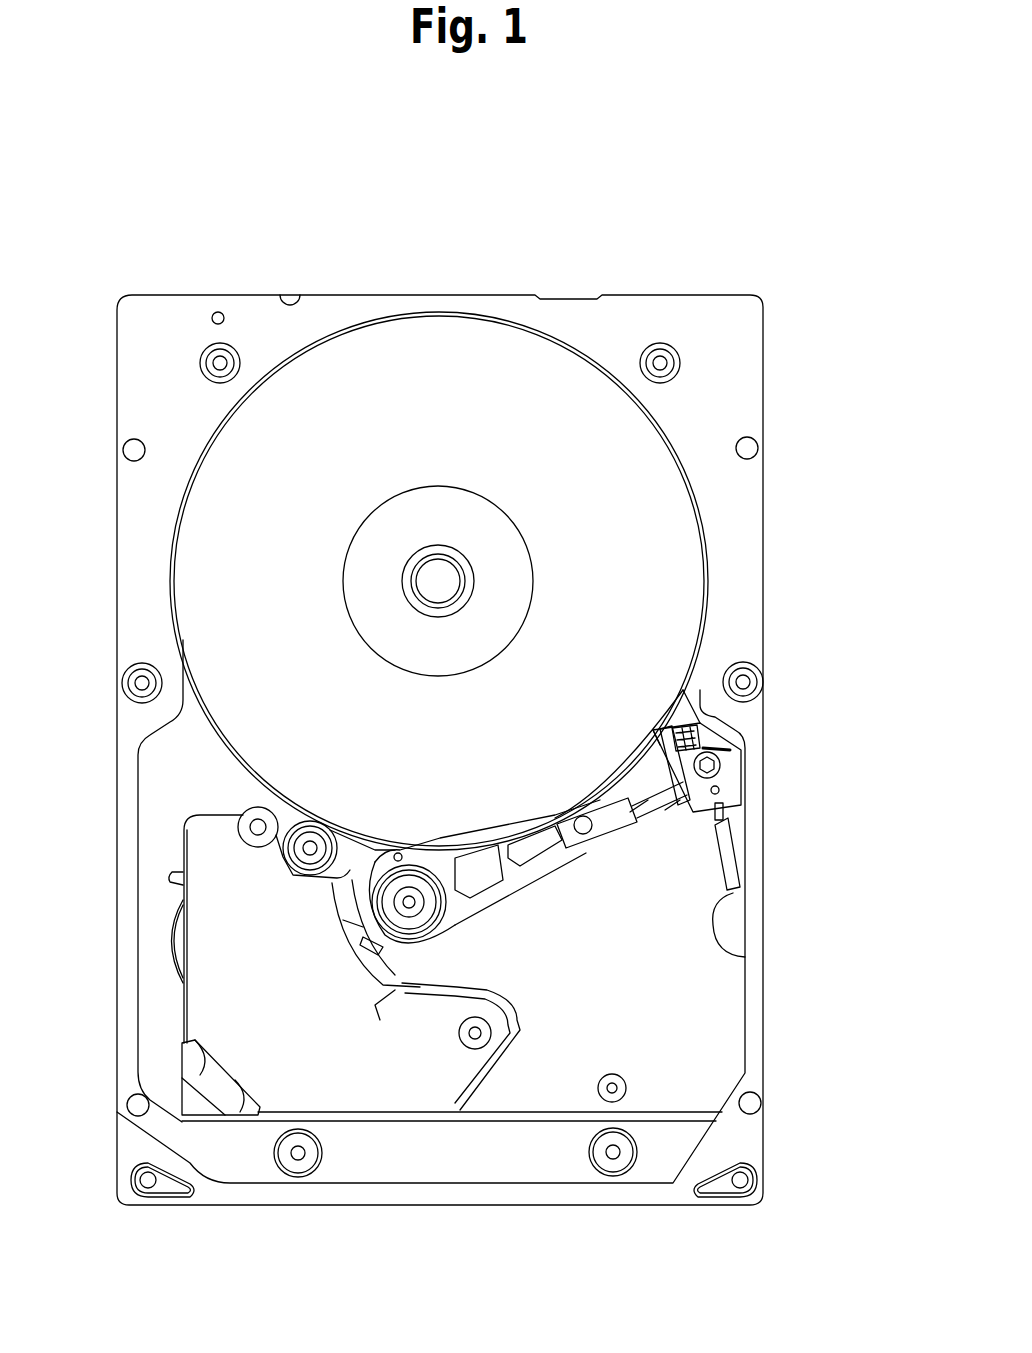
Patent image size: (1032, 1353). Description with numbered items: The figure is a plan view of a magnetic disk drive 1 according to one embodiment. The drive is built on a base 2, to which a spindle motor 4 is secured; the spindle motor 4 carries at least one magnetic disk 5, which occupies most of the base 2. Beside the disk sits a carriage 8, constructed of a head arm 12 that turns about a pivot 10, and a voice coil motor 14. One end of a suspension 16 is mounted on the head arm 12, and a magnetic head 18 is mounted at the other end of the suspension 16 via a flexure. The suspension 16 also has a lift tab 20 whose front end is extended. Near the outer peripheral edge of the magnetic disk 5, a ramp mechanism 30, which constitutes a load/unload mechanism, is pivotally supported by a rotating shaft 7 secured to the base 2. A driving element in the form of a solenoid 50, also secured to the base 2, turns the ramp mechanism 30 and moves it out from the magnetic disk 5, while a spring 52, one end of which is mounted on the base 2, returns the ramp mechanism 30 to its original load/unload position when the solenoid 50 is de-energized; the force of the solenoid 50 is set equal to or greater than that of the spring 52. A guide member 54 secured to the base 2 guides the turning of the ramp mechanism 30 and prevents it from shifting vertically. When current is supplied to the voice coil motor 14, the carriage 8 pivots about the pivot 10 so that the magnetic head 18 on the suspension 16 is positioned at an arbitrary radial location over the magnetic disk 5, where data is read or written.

The magnetic disk drive 1 is at (608, 265).
The base 2 is at (168, 347).
The spindle motor 4 is at (441, 581).
The magnetic disk 5 is at (222, 528).
The rotating shaft 7 is at (750, 820).
The carriage 8 is at (518, 877).
The pivot 10 is at (409, 905).
The head arm 12 is at (565, 867).
The voice coil motor 14 is at (205, 938).
The suspension 16 is at (643, 803).
The magnetic head 18 is at (673, 800).
The lift tab 20 is at (718, 790).
The ramp mechanism 30 is at (727, 740).
The driving element (solenoid) 50 is at (733, 868).
The spring 52 is at (703, 732).
The guide member 54 is at (727, 765).